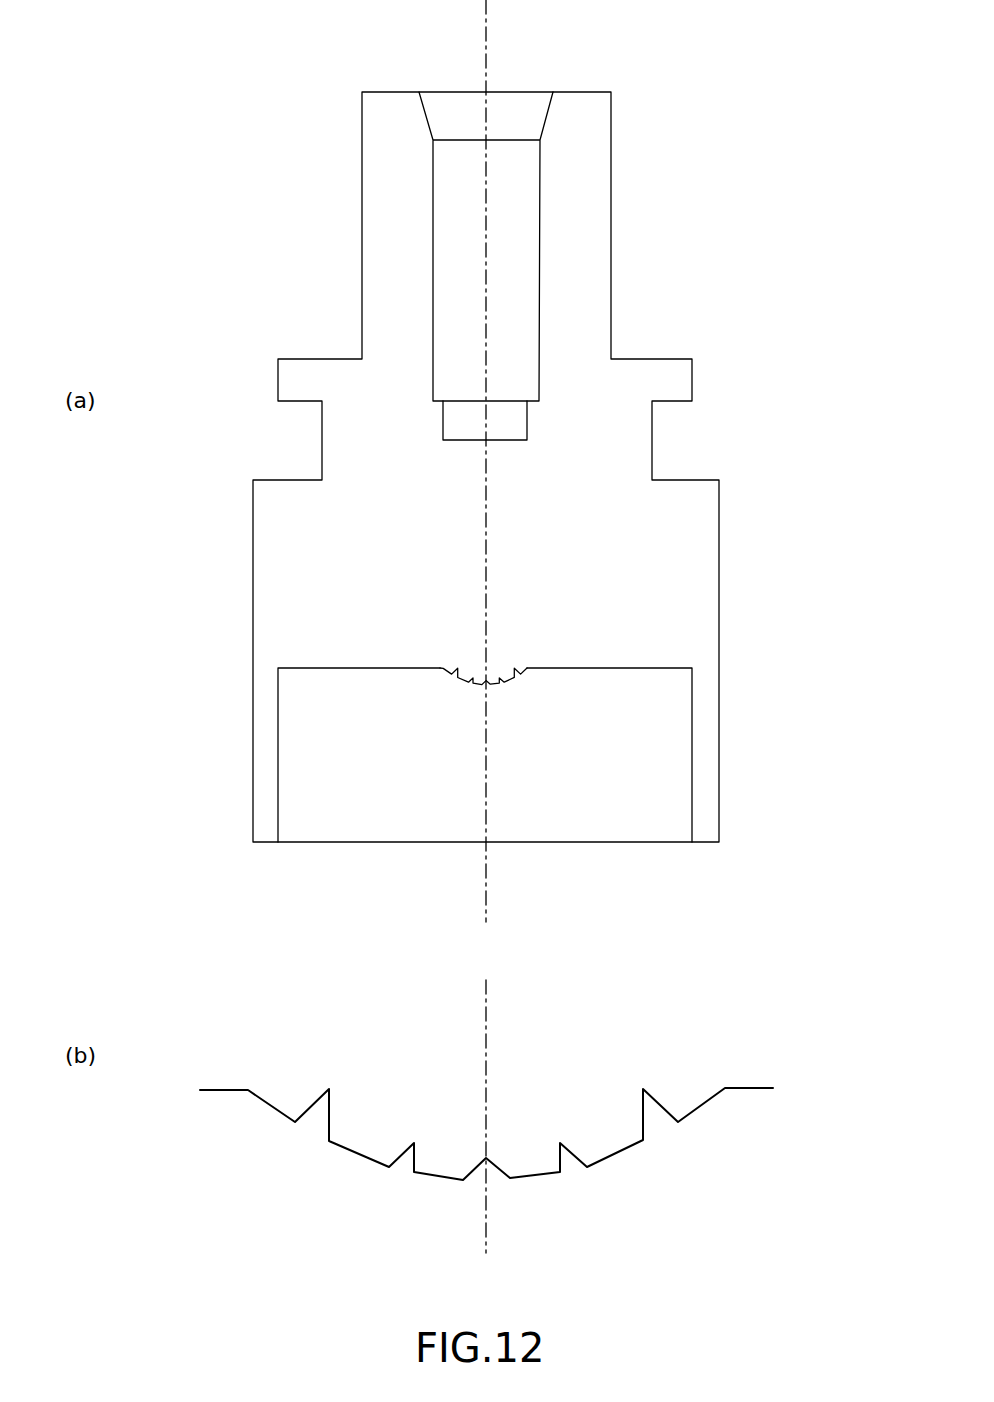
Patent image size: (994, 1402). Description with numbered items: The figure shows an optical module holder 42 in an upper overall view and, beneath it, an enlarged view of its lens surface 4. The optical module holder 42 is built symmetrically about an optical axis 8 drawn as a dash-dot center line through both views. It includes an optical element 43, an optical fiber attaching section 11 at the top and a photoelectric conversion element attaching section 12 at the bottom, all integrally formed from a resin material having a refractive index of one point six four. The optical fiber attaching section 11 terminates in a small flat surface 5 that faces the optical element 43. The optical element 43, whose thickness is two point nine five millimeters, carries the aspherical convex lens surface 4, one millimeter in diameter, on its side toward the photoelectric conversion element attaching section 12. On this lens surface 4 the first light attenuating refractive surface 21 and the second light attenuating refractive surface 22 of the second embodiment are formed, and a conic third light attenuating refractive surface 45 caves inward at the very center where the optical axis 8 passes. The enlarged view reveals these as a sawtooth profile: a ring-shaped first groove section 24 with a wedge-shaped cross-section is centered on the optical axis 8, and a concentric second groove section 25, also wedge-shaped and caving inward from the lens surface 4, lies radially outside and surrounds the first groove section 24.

The optical module holder 42 is at (243, 95).
The optical axis 8 is at (492, 45).
The optical fiber attaching section 11 is at (611, 230).
The flat surface 5 is at (498, 440).
The photoelectric conversion element attaching section 12 is at (719, 740).
The optical element 43 is at (607, 555).
The lens surface 4 is at (512, 678).
The second light attenuating refractive surface 22 is at (453, 675).
The first light attenuating refractive surface 21 is at (472, 680).
The third light attenuating refractive surface 45 is at (485, 683).
The first groove section 24 is at (568, 1172).
The second groove section 25 is at (657, 1125).